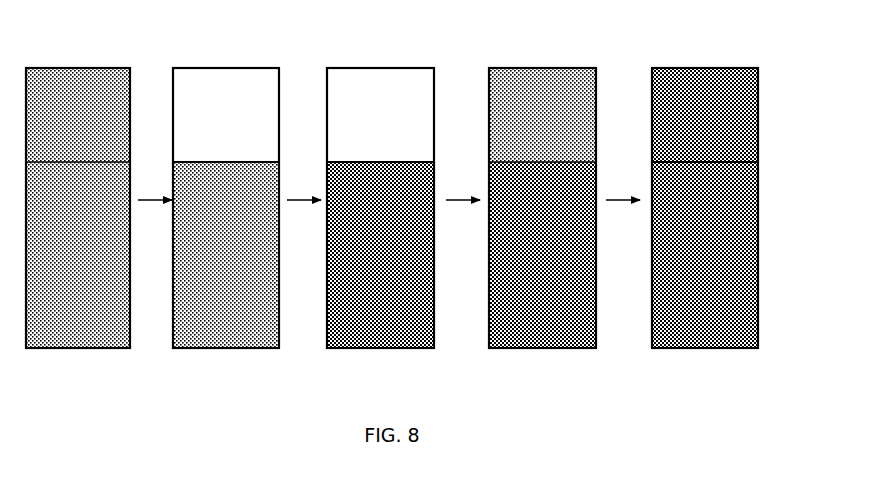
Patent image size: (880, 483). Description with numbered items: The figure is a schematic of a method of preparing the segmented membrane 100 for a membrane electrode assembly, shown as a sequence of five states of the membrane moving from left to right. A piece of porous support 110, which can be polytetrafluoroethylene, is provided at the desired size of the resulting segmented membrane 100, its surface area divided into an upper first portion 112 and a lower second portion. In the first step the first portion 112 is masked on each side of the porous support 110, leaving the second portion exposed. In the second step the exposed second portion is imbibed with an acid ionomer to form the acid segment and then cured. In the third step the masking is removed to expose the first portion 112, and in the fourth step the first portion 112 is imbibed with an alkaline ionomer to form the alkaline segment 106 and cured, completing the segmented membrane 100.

The segmented membrane 100 is at (725, 203).
The first fuel cell segment 106 is at (698, 92).
The porous support 110 is at (74, 92).
The first portion 112 is at (92, 207).